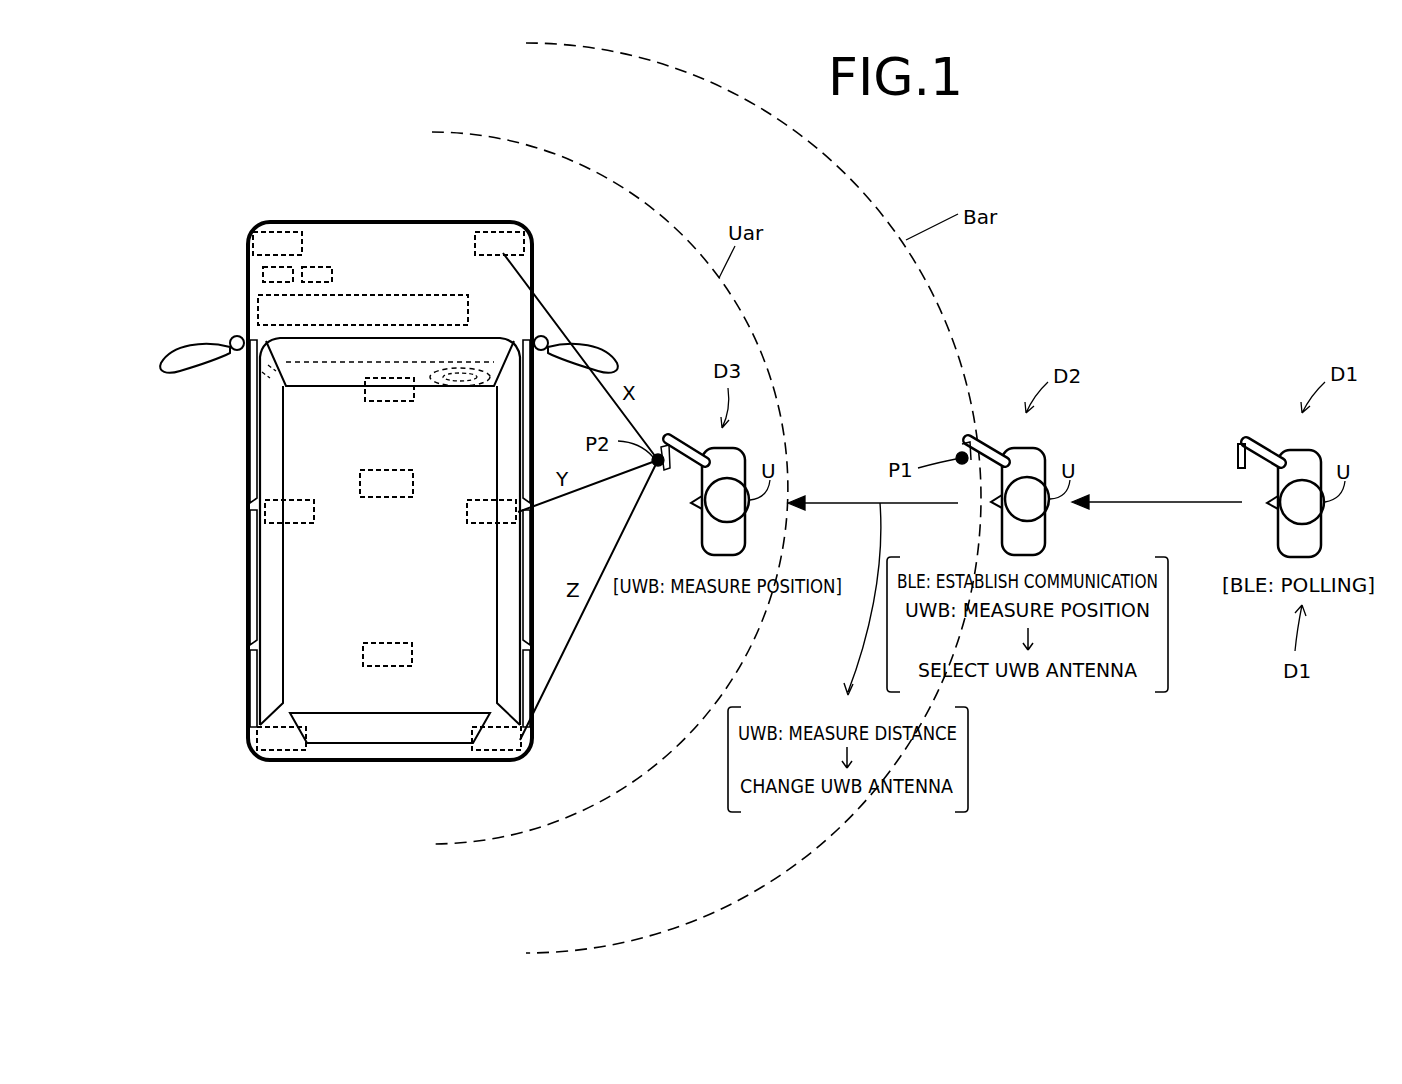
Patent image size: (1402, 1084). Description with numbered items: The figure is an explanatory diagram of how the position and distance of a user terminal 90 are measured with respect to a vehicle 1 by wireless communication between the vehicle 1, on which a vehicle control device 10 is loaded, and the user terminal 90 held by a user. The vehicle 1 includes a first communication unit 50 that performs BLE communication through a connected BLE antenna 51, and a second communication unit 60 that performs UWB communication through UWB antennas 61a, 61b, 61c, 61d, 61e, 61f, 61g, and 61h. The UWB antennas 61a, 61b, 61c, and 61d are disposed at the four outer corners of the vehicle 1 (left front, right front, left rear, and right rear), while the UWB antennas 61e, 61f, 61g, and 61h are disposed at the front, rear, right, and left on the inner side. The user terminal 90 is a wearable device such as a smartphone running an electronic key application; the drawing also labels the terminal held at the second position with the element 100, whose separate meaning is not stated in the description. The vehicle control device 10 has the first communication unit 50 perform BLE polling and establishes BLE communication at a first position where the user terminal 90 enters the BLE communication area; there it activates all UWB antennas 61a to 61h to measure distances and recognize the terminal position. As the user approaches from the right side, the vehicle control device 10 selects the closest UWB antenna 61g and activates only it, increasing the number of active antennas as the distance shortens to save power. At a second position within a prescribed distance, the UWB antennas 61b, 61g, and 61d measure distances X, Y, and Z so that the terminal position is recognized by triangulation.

The vehicle 1 is at (384, 222).
The vehicle control device 10 is at (258, 310).
The first communication unit 50 is at (332, 278).
The BLE antenna 51 is at (377, 470).
The second communication unit 60 is at (263, 275).
The UWB antenna 61a is at (276, 232).
The UWB antenna 61b is at (498, 232).
The UWB antenna 61c is at (283, 760).
The UWB antenna 61d is at (500, 760).
The UWB antenna 61e is at (388, 401).
The UWB antenna 61f is at (290, 524).
The UWB antenna 61g is at (480, 524).
The UWB antenna 61h is at (388, 643).
The user terminal 90 is at (964, 444).
The portable device 100 is at (666, 470).